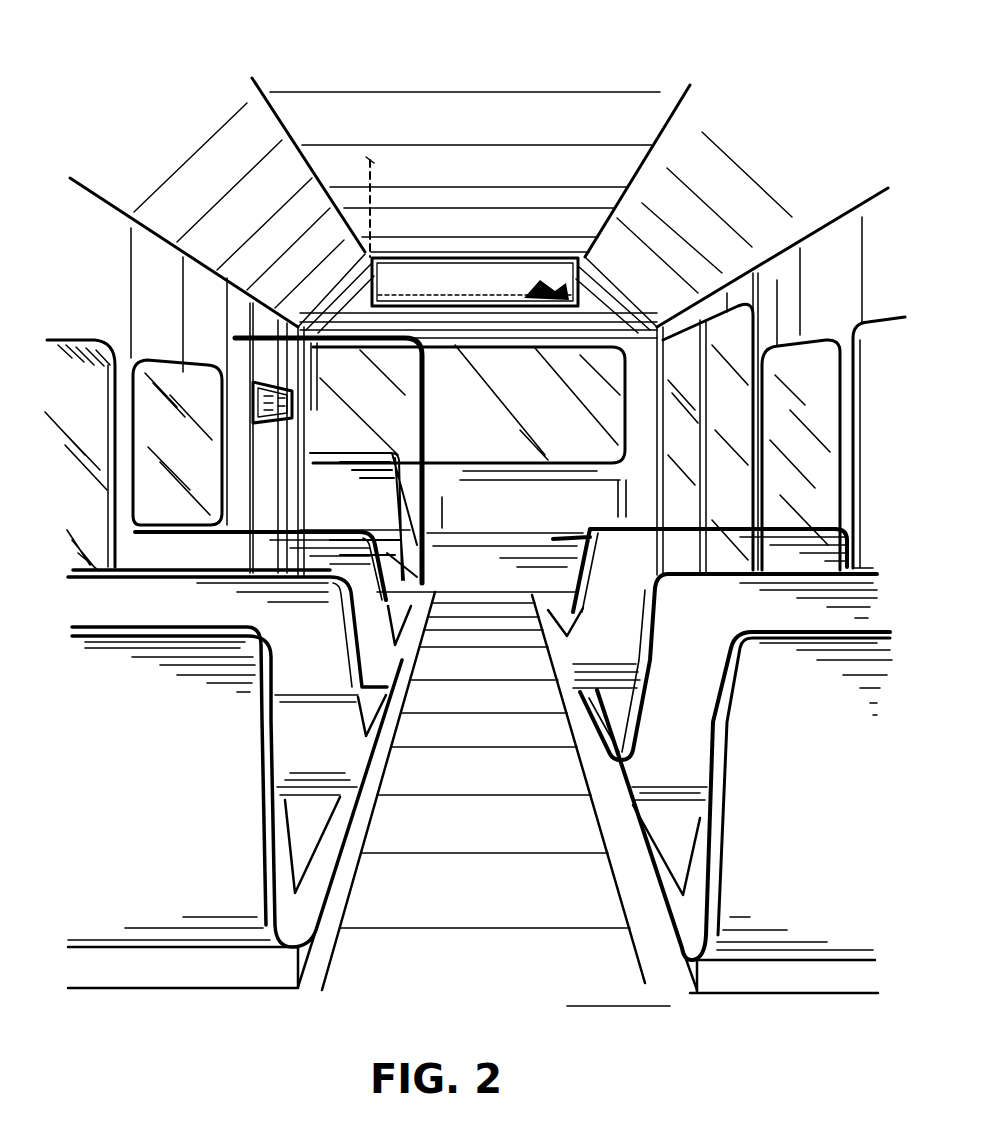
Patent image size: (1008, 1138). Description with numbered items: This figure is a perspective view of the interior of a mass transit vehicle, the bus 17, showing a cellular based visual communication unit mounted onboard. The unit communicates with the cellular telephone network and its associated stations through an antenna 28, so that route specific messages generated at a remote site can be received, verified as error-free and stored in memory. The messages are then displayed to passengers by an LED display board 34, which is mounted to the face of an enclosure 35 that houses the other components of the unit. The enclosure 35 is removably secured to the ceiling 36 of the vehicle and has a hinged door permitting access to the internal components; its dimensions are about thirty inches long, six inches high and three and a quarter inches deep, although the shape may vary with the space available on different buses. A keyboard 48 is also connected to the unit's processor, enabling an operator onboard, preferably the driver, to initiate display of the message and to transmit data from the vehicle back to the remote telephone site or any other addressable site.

The bus 17 is at (483, 791).
The antenna 28 is at (372, 160).
The LED display board 34 is at (523, 283).
The enclosure 35 is at (522, 292).
The ceiling 36 is at (479, 208).
The keyboard 48 is at (248, 380).